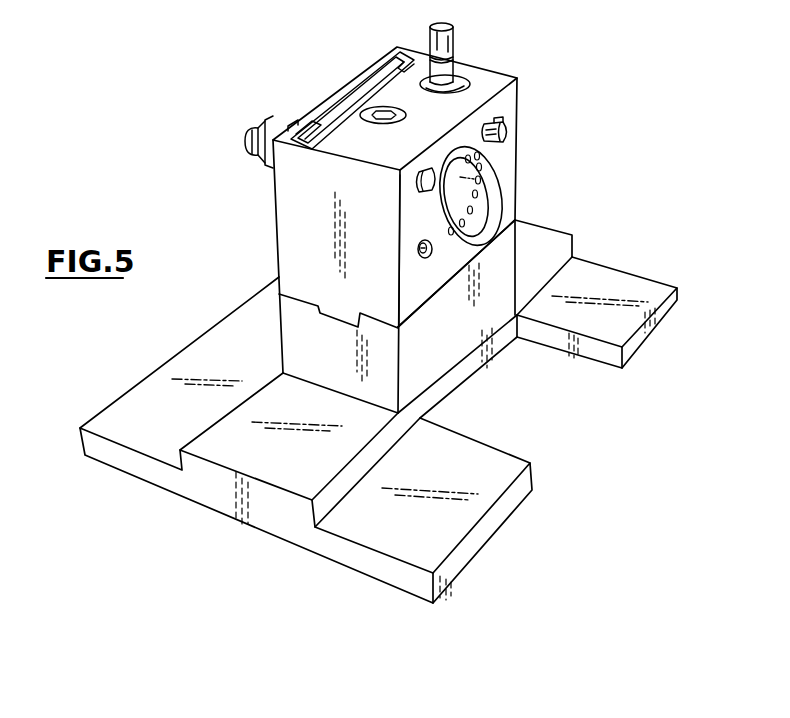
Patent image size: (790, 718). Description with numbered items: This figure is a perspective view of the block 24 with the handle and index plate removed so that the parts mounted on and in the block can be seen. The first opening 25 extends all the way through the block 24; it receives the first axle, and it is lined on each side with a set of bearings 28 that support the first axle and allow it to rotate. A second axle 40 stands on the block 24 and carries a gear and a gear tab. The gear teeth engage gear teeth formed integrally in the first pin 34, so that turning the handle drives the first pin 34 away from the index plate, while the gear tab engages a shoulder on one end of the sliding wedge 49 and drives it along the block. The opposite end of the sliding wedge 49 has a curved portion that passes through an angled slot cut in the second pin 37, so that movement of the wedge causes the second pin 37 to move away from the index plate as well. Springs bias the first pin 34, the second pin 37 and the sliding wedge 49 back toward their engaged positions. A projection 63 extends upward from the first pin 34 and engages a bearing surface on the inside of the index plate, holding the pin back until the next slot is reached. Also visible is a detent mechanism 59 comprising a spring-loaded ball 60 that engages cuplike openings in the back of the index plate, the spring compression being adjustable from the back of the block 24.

The block 24 is at (485, 82).
The first opening 25 is at (450, 200).
The bearings 28 is at (480, 177).
The first pin 34 is at (510, 137).
The second pin 37 is at (421, 168).
The second axle 40 is at (457, 35).
The sliding wedge 49 is at (348, 105).
The detent mechanism 59 is at (413, 218).
The spring-loaded ball 60 is at (425, 258).
The projection 63 is at (500, 119).